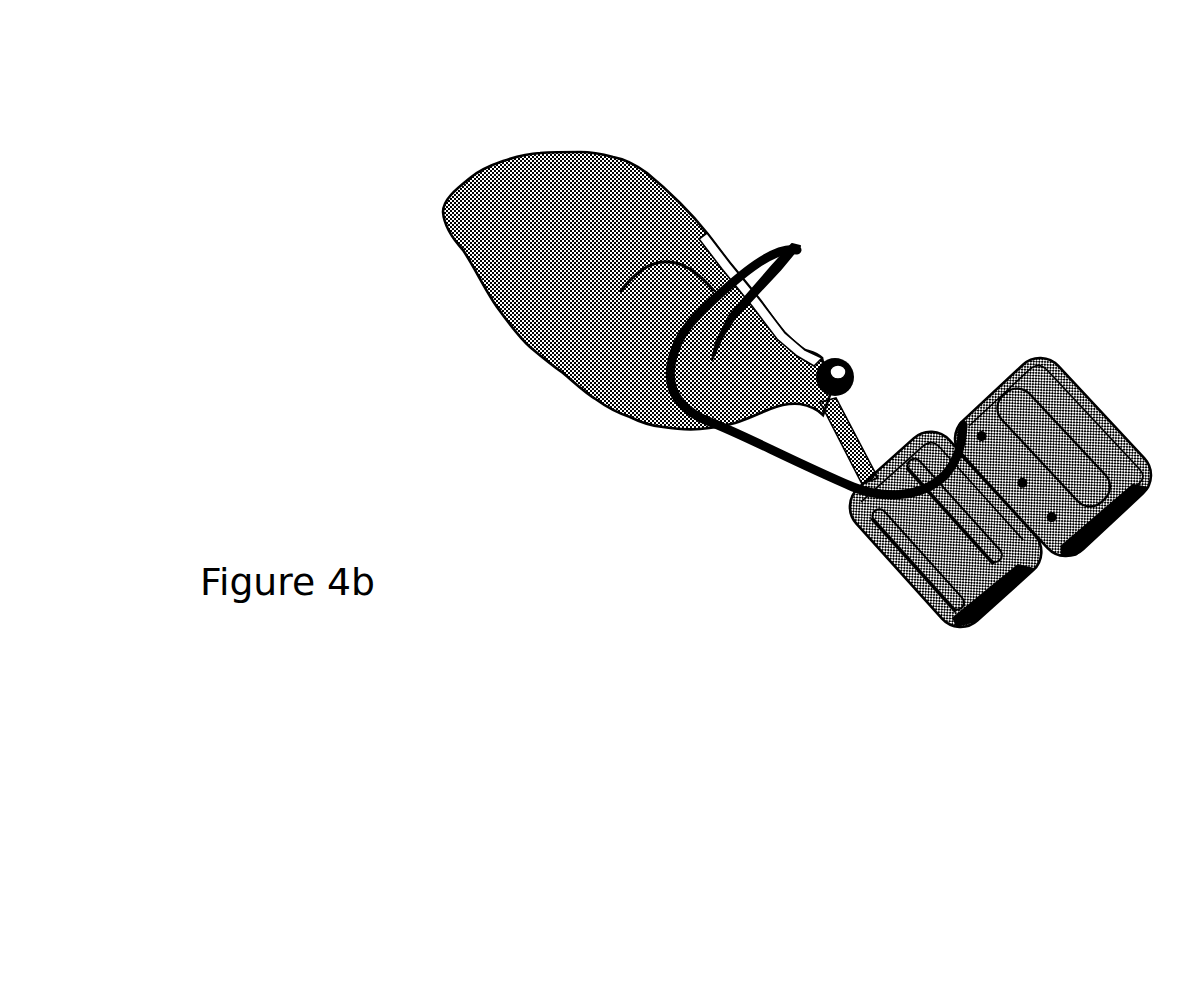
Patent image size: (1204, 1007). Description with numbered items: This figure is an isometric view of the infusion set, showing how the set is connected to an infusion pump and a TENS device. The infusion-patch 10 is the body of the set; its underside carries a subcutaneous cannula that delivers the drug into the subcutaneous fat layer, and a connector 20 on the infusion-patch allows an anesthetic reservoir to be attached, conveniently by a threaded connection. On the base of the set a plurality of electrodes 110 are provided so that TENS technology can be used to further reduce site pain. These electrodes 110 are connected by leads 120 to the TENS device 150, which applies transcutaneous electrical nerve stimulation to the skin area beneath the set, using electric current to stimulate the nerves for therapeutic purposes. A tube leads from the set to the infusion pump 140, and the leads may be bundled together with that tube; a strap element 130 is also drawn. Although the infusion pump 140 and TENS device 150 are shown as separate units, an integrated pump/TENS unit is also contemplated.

The infusion-patch 10 is at (636, 306).
The electrodes 110 is at (705, 368).
The leads 120 is at (778, 207).
The cord strap 130 is at (823, 438).
The connector 20 is at (843, 316).
The infusion pump 140 is at (1080, 325).
The TENS device 150 is at (976, 680).